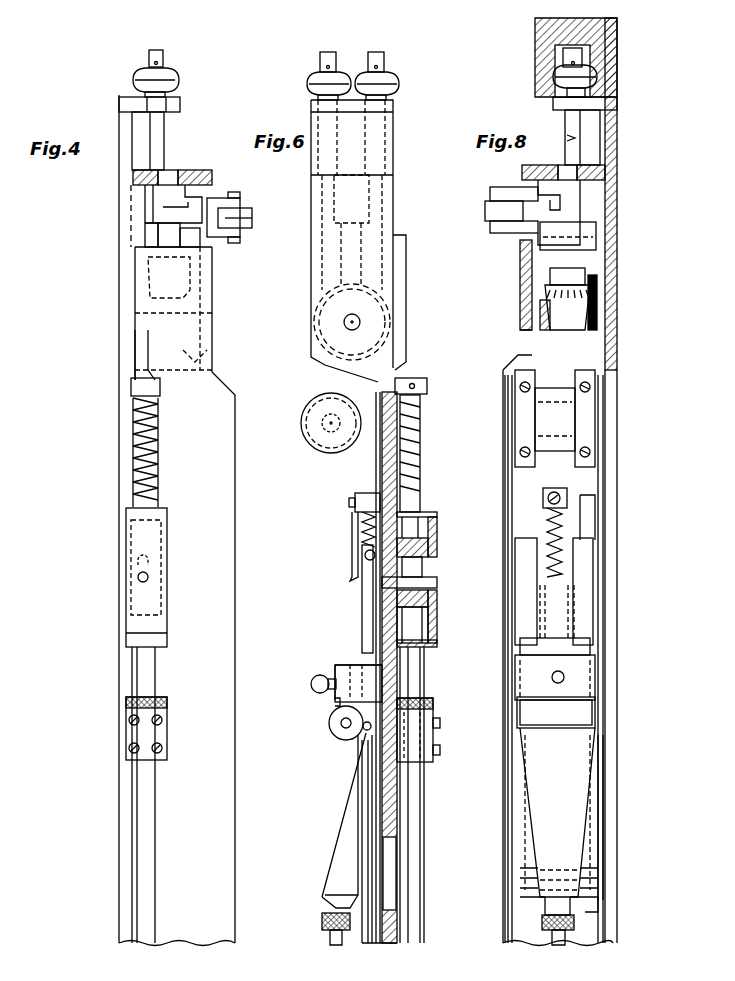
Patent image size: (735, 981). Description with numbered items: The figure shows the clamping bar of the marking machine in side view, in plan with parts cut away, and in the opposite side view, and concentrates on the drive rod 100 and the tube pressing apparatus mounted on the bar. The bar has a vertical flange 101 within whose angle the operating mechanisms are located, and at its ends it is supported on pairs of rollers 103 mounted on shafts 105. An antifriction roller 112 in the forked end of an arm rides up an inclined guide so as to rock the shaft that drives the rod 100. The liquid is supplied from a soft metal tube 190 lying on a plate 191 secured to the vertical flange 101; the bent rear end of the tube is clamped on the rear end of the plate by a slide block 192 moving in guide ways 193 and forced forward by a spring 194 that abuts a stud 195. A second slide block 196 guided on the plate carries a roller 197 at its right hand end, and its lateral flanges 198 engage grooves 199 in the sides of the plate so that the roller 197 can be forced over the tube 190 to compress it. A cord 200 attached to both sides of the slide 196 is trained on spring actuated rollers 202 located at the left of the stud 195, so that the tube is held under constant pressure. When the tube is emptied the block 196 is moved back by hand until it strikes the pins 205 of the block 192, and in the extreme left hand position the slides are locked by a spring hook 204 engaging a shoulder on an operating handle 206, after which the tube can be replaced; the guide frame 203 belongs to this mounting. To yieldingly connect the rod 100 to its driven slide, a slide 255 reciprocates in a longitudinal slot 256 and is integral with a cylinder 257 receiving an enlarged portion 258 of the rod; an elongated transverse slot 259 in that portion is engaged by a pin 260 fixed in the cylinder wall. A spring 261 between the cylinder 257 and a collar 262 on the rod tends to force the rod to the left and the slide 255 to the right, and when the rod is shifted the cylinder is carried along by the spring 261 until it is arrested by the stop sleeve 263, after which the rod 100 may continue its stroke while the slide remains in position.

In FIG. 4, the rod 100 is at (145, 834).
In FIG. 4, the vertical flange 101 is at (206, 644).
In FIG. 4, the rollers 103 is at (170, 80).
In FIG. 6, the rollers 103 is at (353, 76).
In FIG. 8, the rollers 103 is at (595, 78).
In FIG. 4, the shafts 105 is at (155, 143).
In FIG. 8, the shafts 105 is at (569, 138).
In FIG. 4, the antifriction roller 112 is at (252, 216).
In FIG. 8, the antifriction roller 112 is at (540, 215).
In FIG. 6, the tube 190 is at (347, 832).
In FIG. 8, the tube 190 is at (565, 812).
In FIG. 6, the plate 191 is at (372, 868).
In FIG. 8, the plate 191 is at (585, 862).
In FIG. 6, the slide block 192 is at (364, 595).
In FIG. 6, the guide ways 193 is at (400, 667).
In FIG. 8, the guide ways 193 is at (510, 508).
In FIG. 6, the spring 194 is at (366, 532).
In FIG. 8, the spring 194 is at (565, 526).
In FIG. 6, the stud 195 is at (360, 502).
In FIG. 8, the stud 195 is at (568, 498).
In FIG. 6, the slide block 196 is at (336, 704).
In FIG. 8, the slide block 196 is at (545, 688).
In FIG. 6, the roller 197 is at (332, 736).
In FIG. 8, the roller 197 is at (578, 720).
In FIG. 6, the lateral flanges 198 is at (372, 691).
In FIG. 8, the lateral flanges 198 is at (592, 646).
In FIG. 6, the grooves 199 is at (372, 806).
In FIG. 8, the grooves 199 is at (596, 842).
In FIG. 6, the cord 200 is at (355, 790).
In FIG. 8, the cord 200 is at (604, 772).
In FIG. 6, the spring actuated rollers 202 is at (316, 425).
In FIG. 8, the spring actuated rollers 202 is at (508, 420).
In FIG. 8, the frame 203 is at (598, 550).
In FIG. 6, the spring hook 204 is at (351, 568).
In FIG. 6, the pins 205 is at (340, 666).
In FIG. 6, the operating handle 206 is at (312, 686).
In FIG. 6, the slide 255 is at (430, 656).
In FIG. 6, the longitudinal slot 256 is at (389, 505).
In FIG. 6, the cylinder 257 is at (438, 622).
In FIG. 6, the enlarged portion 258 is at (438, 548).
In FIG. 6, the elongated transverse slot 259 is at (424, 569).
In FIG. 6, the pin 260 is at (424, 583).
In FIG. 6, the spring 261 is at (421, 447).
In FIG. 6, the collar 262 is at (428, 387).
In FIG. 6, the sleeve 263 is at (415, 736).